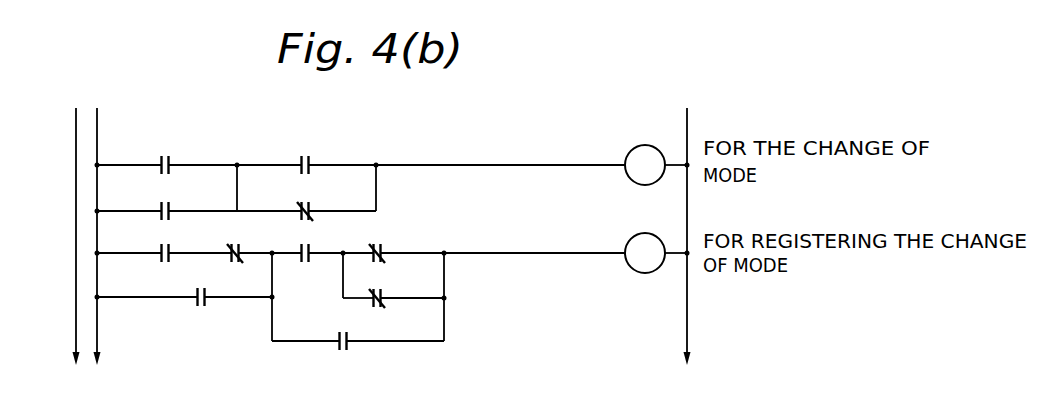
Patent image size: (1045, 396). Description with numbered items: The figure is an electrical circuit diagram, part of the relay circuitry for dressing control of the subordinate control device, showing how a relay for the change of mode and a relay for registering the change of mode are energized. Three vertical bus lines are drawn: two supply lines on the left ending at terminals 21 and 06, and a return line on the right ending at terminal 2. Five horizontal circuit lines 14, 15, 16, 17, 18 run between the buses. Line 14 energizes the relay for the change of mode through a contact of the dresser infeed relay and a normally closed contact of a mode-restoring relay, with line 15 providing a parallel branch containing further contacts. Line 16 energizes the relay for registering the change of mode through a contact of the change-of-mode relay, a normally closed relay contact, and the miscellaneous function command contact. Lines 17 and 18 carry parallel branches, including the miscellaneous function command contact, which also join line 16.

The circuit line 14 (9CR5 relay coil energizing rung) 14 is at (365, 160).
The circuit line 15 (parallel branch 9CR5 / 9CR16 contacts) 15 is at (208, 193).
The circuit line 16 (9CR6 relay coil energizing rung) 16 is at (365, 249).
The circuit line 17 (9CR6 contact branch and 9CR11 branch) 17 is at (244, 280).
The circuit line 18 (CRM22 contact branch) 18 is at (242, 301).
The supply bus line A terminal 21 is at (76, 240).
The supply bus line B terminal 06 is at (103, 240).
The return bus line C terminal 2 is at (687, 240).